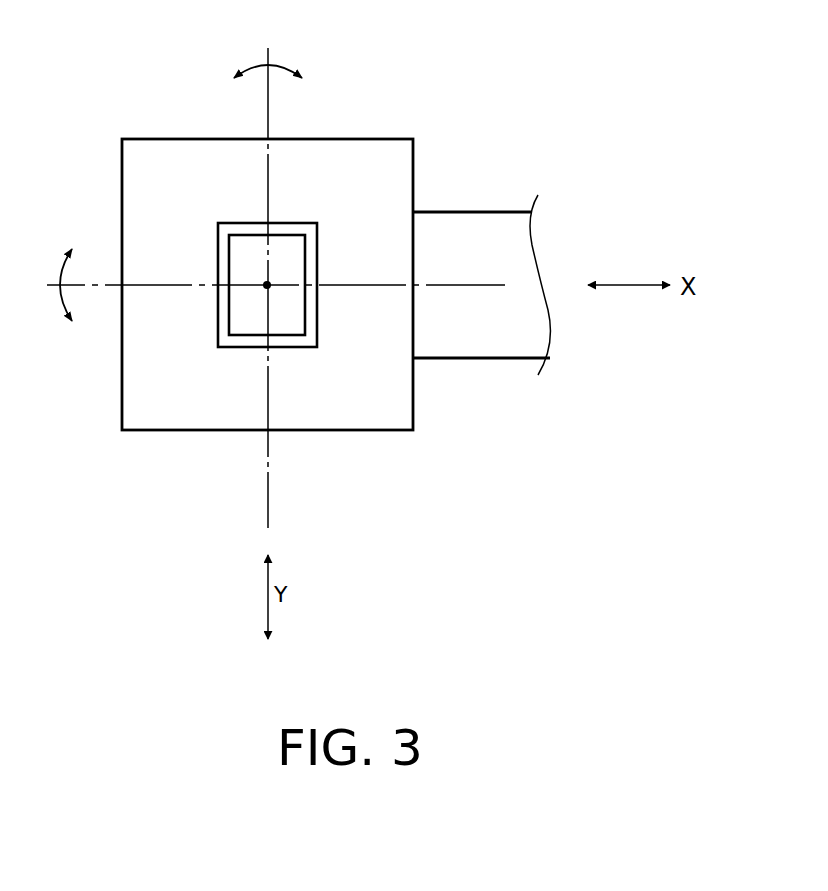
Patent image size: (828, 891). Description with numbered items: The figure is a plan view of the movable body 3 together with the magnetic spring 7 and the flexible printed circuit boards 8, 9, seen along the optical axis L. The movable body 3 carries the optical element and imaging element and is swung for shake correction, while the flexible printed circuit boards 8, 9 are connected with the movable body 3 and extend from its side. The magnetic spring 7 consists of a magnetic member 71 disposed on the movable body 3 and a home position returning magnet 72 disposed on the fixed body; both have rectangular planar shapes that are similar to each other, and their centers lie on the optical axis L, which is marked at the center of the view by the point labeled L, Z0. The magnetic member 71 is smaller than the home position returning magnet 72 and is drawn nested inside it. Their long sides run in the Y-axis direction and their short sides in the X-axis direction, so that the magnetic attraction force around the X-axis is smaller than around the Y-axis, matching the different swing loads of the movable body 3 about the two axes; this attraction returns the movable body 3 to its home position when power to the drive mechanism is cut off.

The movable body 3 is at (383, 139).
The flexible printed circuit board 8 is at (493, 242).
The flexible printed circuit board 9 is at (495, 212).
The magnetic spring 7 is at (229, 373).
The magnetic member 71 is at (228, 326).
The home position returning magnet 72 is at (240, 348).
The optical axis L is at (331, 308).
The rotation axis Z0 is at (268, 287).